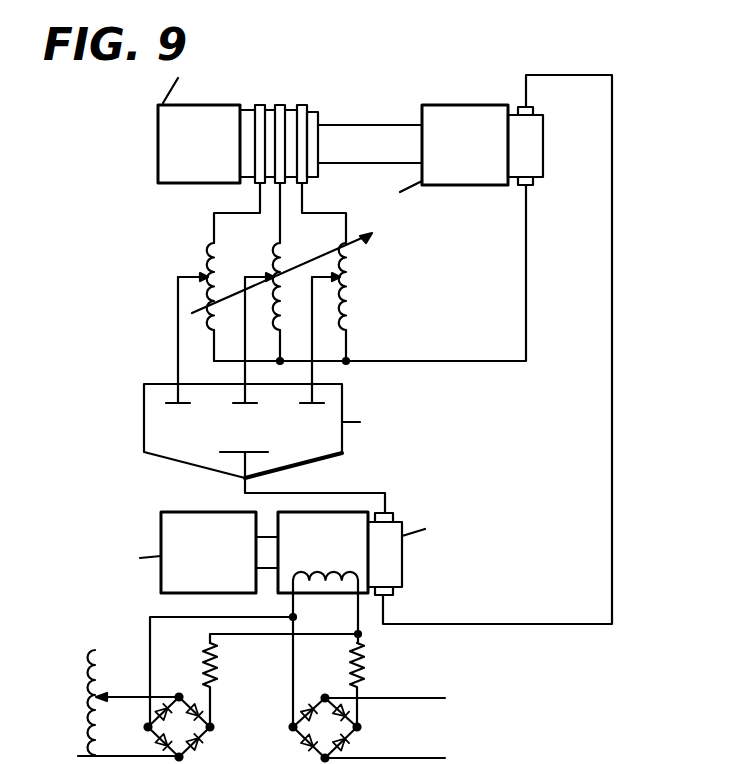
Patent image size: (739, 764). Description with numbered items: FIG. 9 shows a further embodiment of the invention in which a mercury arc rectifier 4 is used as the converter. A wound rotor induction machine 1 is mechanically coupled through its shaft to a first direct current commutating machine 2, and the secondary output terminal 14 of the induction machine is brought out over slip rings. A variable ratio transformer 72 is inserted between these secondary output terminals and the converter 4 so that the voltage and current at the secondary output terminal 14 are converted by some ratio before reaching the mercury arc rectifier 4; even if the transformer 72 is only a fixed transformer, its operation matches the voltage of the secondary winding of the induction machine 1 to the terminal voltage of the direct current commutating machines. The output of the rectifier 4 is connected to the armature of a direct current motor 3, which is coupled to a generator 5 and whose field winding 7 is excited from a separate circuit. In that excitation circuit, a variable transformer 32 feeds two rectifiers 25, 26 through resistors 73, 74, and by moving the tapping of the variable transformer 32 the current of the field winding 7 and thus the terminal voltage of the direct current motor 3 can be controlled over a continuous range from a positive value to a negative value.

The wound rotor induction machine 1 is at (290, 125).
The direct current commutating machine 2 is at (413, 349).
The direct current motor 3 is at (436, 553).
The mercury arc rectifier 4 is at (327, 448).
The generator 5 is at (155, 552).
The field winding 7 is at (313, 582).
The secondary output terminal 14 is at (304, 186).
The rectifier 25 is at (194, 729).
The rectifier 26 is at (368, 728).
The variable transformer 32 is at (105, 703).
The variable ratio transformer 72 is at (283, 283).
The resistor 73 is at (192, 685).
The resistor 74 is at (339, 685).